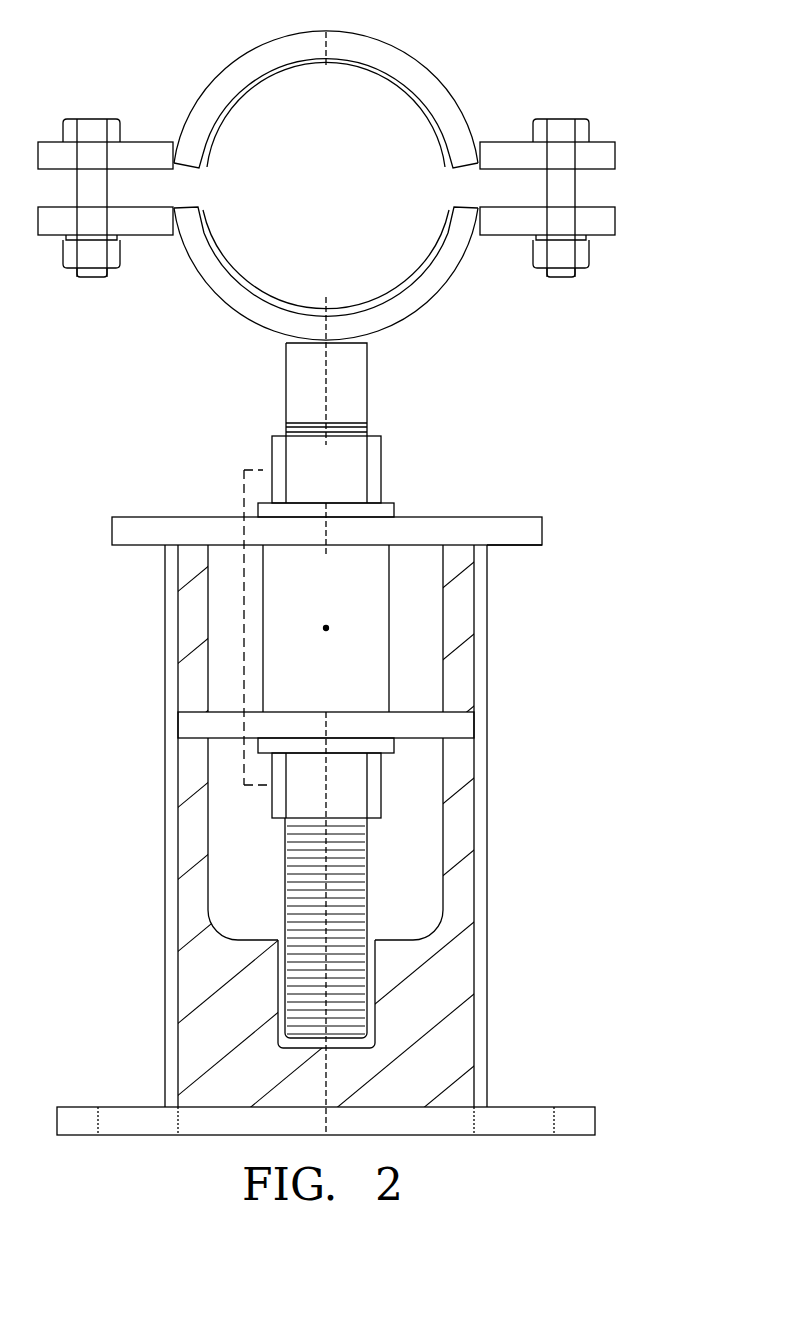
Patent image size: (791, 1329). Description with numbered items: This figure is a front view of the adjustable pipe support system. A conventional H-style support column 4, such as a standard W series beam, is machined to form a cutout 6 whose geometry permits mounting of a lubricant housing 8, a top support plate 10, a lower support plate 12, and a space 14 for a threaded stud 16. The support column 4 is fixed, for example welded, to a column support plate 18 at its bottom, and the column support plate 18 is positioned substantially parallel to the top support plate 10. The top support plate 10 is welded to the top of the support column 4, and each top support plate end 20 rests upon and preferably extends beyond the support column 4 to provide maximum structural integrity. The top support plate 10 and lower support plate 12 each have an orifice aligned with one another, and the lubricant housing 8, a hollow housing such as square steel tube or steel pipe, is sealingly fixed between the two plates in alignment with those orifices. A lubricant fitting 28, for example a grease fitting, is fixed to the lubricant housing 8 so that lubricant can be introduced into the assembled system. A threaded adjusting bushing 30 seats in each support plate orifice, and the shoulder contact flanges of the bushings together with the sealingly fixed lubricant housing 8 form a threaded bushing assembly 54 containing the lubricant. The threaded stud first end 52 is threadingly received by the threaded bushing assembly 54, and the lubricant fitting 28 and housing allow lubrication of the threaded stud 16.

The support column 4 is at (493, 642).
The cutout 6 is at (425, 840).
The lubricant housing 8 is at (318, 611).
The top support plate 10 is at (542, 531).
The lower support plate 12 is at (465, 725).
The space 14 is at (361, 826).
The threaded stud 16 is at (373, 920).
The column support plate 18 is at (595, 1121).
The top support plate end 20 is at (518, 545).
The lubricant fitting 28 is at (326, 630).
The threaded adjusting bushing 30 is at (381, 470).
The threaded stud first end 52 is at (282, 920).
The threaded bushing assembly 54 is at (244, 470).